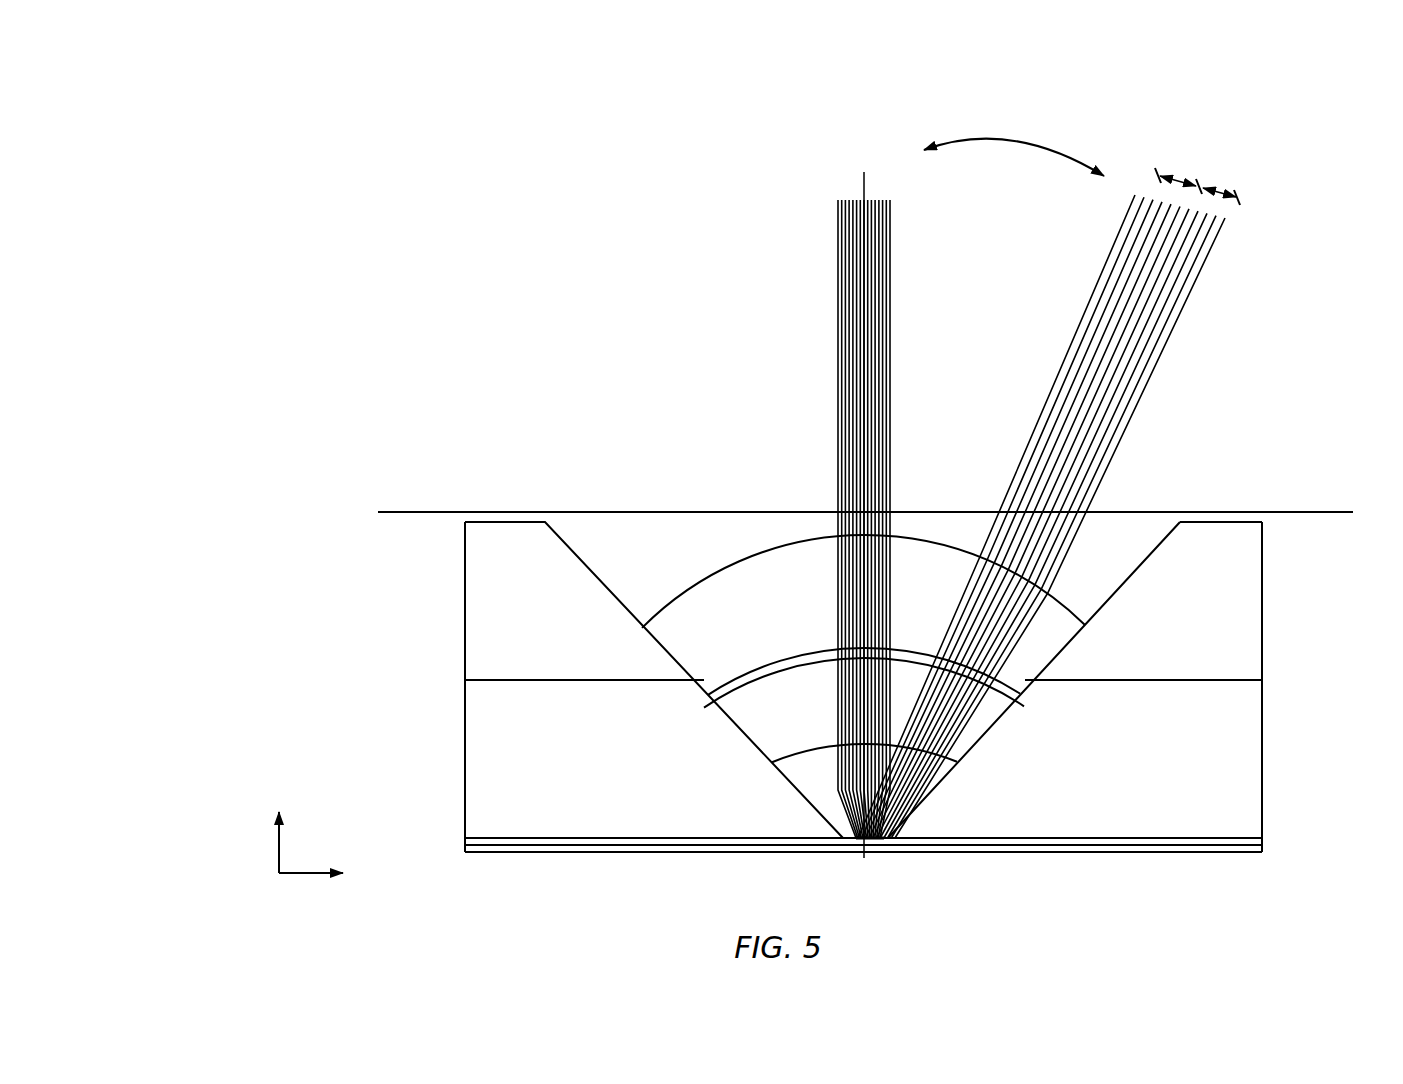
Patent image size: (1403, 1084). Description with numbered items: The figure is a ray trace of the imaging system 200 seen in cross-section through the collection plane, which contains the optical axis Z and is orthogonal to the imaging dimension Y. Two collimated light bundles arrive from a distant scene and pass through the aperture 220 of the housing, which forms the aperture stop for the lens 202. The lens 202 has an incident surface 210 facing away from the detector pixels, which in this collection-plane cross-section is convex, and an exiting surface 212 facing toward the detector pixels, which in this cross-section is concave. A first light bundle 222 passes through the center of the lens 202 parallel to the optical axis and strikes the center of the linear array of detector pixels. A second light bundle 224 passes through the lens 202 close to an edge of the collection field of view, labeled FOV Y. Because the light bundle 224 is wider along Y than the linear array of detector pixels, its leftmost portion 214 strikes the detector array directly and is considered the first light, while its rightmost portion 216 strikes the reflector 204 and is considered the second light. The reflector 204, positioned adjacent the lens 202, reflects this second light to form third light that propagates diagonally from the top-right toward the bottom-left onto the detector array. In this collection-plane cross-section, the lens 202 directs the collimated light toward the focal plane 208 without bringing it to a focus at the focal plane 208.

The imaging system 200 is at (208, 123).
The lens 202 is at (863, 680).
The reflector 204 is at (920, 803).
The focal plane 208 is at (795, 837).
The incident surface 210 is at (685, 592).
The exiting surface 212 is at (797, 755).
The leftmost portion of the light bundle 214 is at (1180, 170).
The rightmost portion of the light bundle 216 is at (1228, 186).
The aperture 220 is at (714, 506).
The light bundle 222 is at (838, 318).
The light bundle 224 is at (1172, 341).